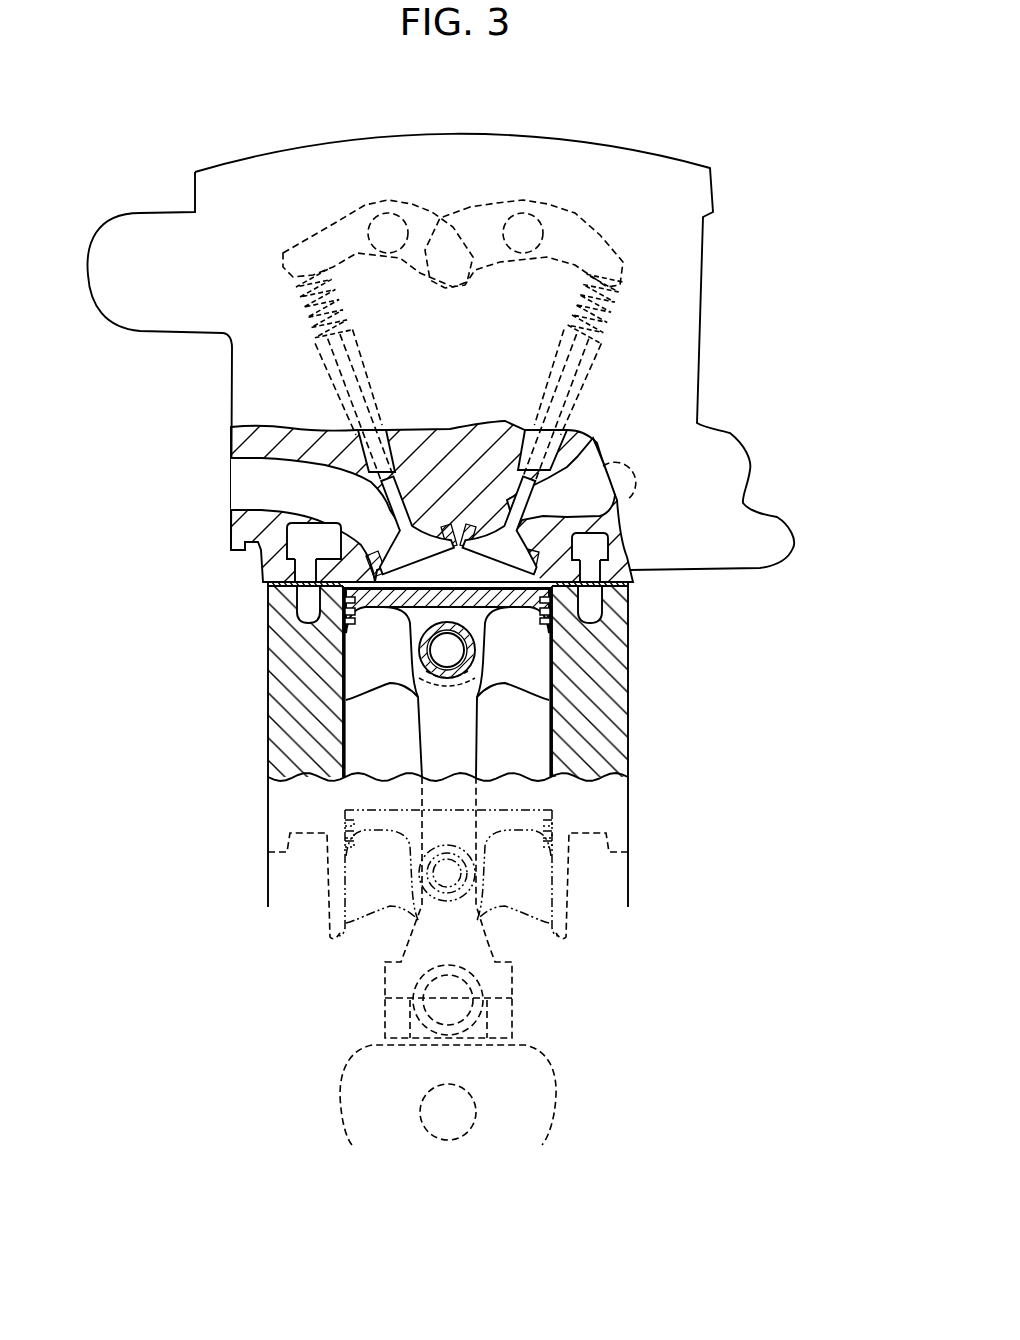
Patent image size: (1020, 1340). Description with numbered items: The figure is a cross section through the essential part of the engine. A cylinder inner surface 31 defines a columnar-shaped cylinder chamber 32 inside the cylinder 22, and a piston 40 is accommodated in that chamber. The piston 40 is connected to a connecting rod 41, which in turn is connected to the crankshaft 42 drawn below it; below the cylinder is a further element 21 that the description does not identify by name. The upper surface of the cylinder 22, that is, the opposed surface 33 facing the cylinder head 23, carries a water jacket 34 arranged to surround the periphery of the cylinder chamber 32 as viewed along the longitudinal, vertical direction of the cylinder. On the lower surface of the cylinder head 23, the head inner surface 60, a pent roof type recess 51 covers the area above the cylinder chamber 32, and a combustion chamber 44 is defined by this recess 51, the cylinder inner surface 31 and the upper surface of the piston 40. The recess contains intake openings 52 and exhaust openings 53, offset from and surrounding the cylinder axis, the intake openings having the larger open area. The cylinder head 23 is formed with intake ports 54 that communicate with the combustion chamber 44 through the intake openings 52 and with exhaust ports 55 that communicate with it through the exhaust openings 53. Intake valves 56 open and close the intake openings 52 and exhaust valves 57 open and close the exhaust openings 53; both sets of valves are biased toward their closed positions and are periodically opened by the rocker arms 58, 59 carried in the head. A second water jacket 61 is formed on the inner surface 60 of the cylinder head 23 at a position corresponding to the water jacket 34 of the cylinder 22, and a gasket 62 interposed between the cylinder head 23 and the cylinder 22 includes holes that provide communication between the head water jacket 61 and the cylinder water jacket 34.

The crankcase 21 is at (268, 897).
The cylinder 22 is at (268, 730).
The cylinder head 23 is at (703, 257).
The cylinder inner surface 31 is at (553, 749).
The cylinder chamber 32 is at (355, 745).
The opposed surface 33 is at (613, 578).
The water jacket 34 is at (593, 605).
The piston 40 is at (508, 667).
The connecting rod 41 is at (373, 717).
The crankshaft 42 is at (478, 1112).
The combustion chamber 44 is at (300, 617).
The recess 51 is at (461, 553).
The intake openings 52 is at (416, 488).
The exhaust openings 53 is at (495, 495).
The intake ports 54 is at (261, 478).
The exhaust ports 55 is at (567, 467).
The intake valves 56 is at (380, 520).
The exhaust valves 57 is at (522, 520).
The rocker arm 58 is at (330, 220).
The rocker arm 59 is at (563, 217).
The head inner surface 60 is at (563, 633).
The water jacket 61 is at (300, 540).
The gasket 62 is at (260, 583).